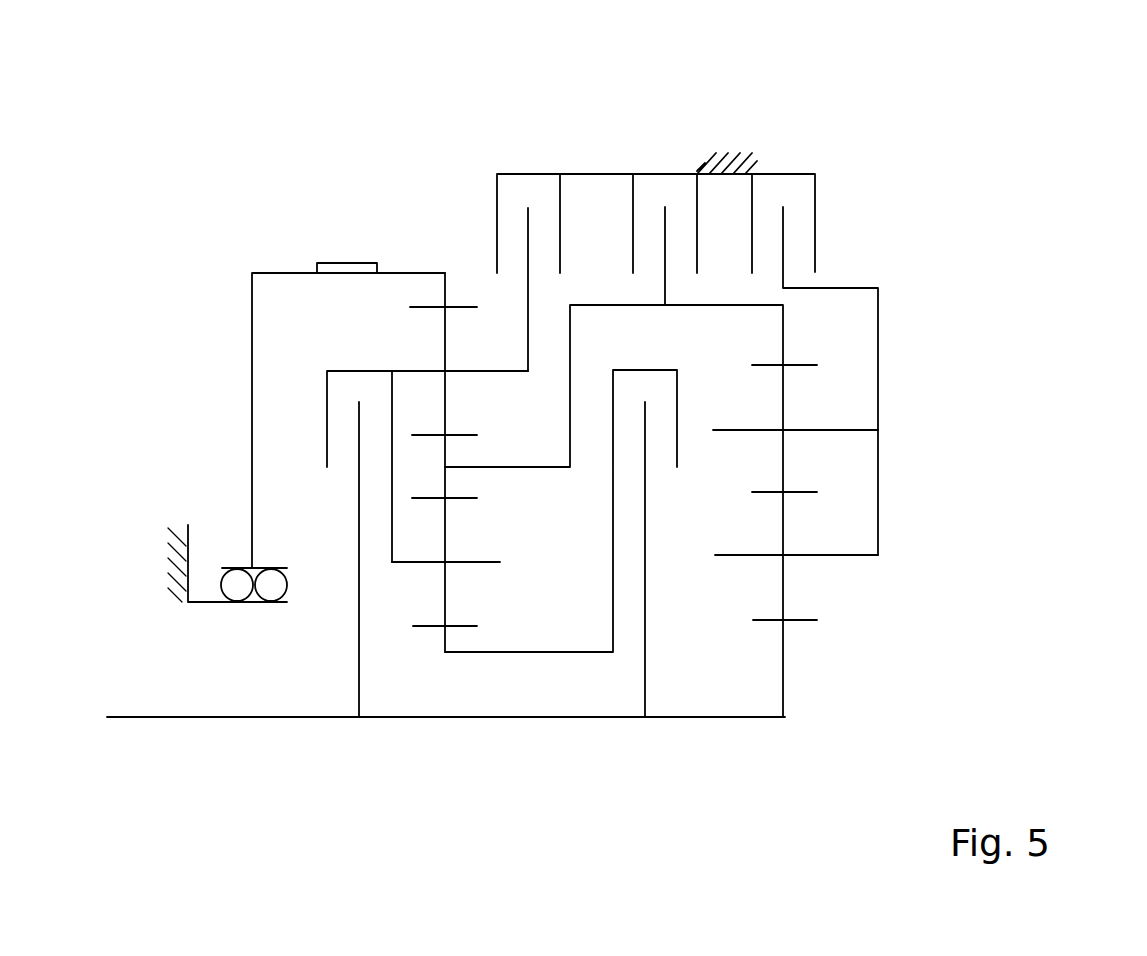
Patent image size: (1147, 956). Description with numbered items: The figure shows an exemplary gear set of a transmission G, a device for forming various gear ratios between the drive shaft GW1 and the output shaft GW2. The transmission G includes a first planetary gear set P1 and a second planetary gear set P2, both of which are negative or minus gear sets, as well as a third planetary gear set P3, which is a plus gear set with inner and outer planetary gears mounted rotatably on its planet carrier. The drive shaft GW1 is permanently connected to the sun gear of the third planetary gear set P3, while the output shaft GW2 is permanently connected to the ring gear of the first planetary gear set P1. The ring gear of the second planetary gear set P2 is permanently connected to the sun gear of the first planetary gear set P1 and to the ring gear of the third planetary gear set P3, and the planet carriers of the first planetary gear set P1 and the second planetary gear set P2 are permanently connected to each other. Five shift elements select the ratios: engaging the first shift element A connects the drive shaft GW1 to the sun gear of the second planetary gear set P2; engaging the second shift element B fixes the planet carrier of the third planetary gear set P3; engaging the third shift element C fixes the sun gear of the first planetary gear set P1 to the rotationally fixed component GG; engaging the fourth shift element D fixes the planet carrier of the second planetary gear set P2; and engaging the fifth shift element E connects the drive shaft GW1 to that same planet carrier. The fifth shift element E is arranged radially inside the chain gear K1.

The drive shaft GW1 is at (138, 720).
The output shaft GW2 is at (280, 272).
The chain gear K1 is at (347, 257).
The fourth shift element D is at (531, 165).
The third shift element C is at (657, 167).
The rotationally fixed component GG is at (720, 153).
The second shift element B is at (782, 165).
The transmission G is at (865, 188).
The fifth shift element E is at (338, 480).
The first planetary gear set P1 is at (485, 388).
The second planetary gear set P2 is at (483, 580).
The first shift element A is at (665, 492).
The third planetary gear set P3 is at (823, 520).